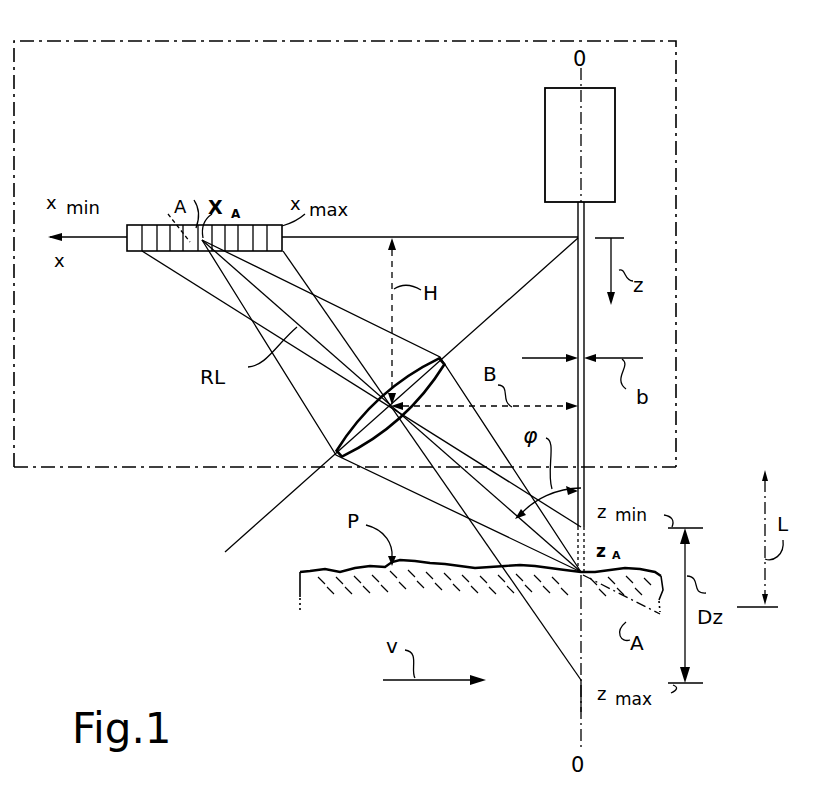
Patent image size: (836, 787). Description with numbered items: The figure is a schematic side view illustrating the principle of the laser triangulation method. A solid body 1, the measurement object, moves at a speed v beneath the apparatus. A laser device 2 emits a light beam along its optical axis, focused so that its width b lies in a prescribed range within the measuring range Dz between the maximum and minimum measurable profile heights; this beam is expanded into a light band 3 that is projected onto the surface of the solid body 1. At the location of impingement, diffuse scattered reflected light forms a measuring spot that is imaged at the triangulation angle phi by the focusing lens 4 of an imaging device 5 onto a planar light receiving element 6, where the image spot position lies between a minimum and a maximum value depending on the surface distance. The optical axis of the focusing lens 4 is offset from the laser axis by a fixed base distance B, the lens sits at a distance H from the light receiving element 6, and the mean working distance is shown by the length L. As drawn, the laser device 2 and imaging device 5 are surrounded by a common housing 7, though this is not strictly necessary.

The solid body 1 is at (298, 594).
The laser device 2 is at (558, 133).
The light band 3 is at (585, 441).
The focusing lens 4 is at (340, 436).
The imaging device 5 is at (106, 451).
The light receiving element 6 is at (165, 228).
The common housing 7 is at (252, 40).